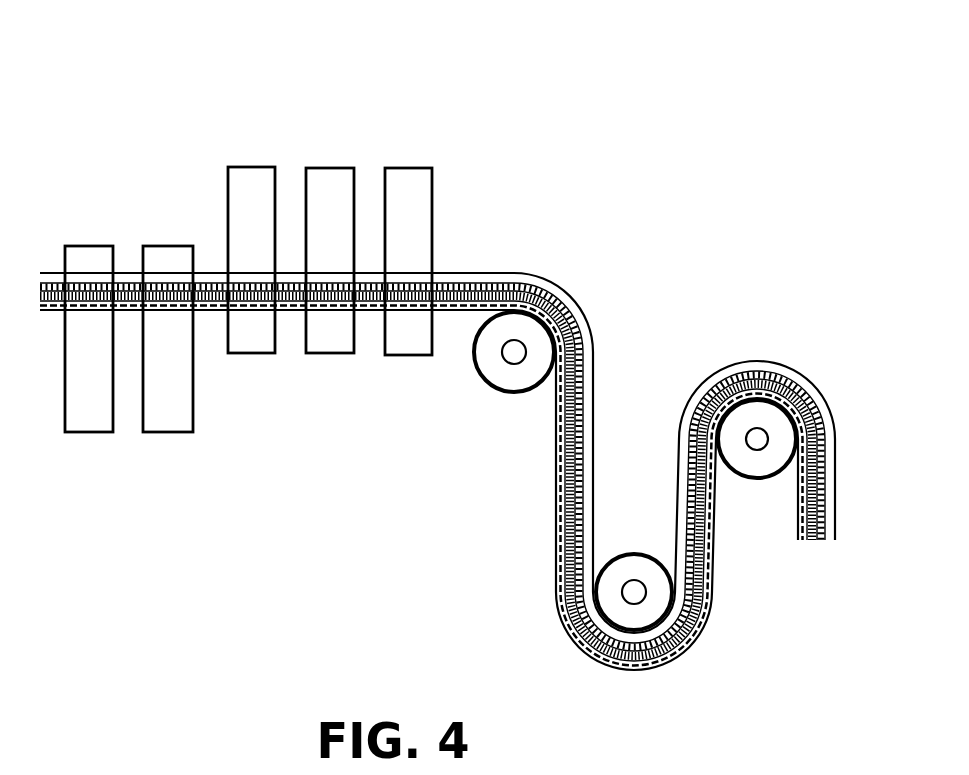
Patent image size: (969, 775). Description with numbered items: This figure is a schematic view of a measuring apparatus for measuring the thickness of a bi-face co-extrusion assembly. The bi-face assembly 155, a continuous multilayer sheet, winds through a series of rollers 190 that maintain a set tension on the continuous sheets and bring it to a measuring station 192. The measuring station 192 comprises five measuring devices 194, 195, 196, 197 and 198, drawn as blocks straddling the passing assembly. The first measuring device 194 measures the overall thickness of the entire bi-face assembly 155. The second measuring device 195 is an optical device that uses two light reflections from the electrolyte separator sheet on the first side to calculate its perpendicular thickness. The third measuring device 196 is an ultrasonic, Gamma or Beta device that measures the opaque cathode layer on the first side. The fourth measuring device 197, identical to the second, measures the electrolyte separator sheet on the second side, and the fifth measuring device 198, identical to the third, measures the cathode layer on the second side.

The bi-face assembly 155 is at (778, 362).
The rollers 190 is at (512, 378).
The measuring station 192 is at (63, 63).
The first measuring device 194 is at (408, 177).
The second measuring device 195 is at (323, 177).
The third measuring device 196 is at (248, 177).
The fourth measuring device 197 is at (161, 420).
The fifth measuring device 198 is at (75, 420).